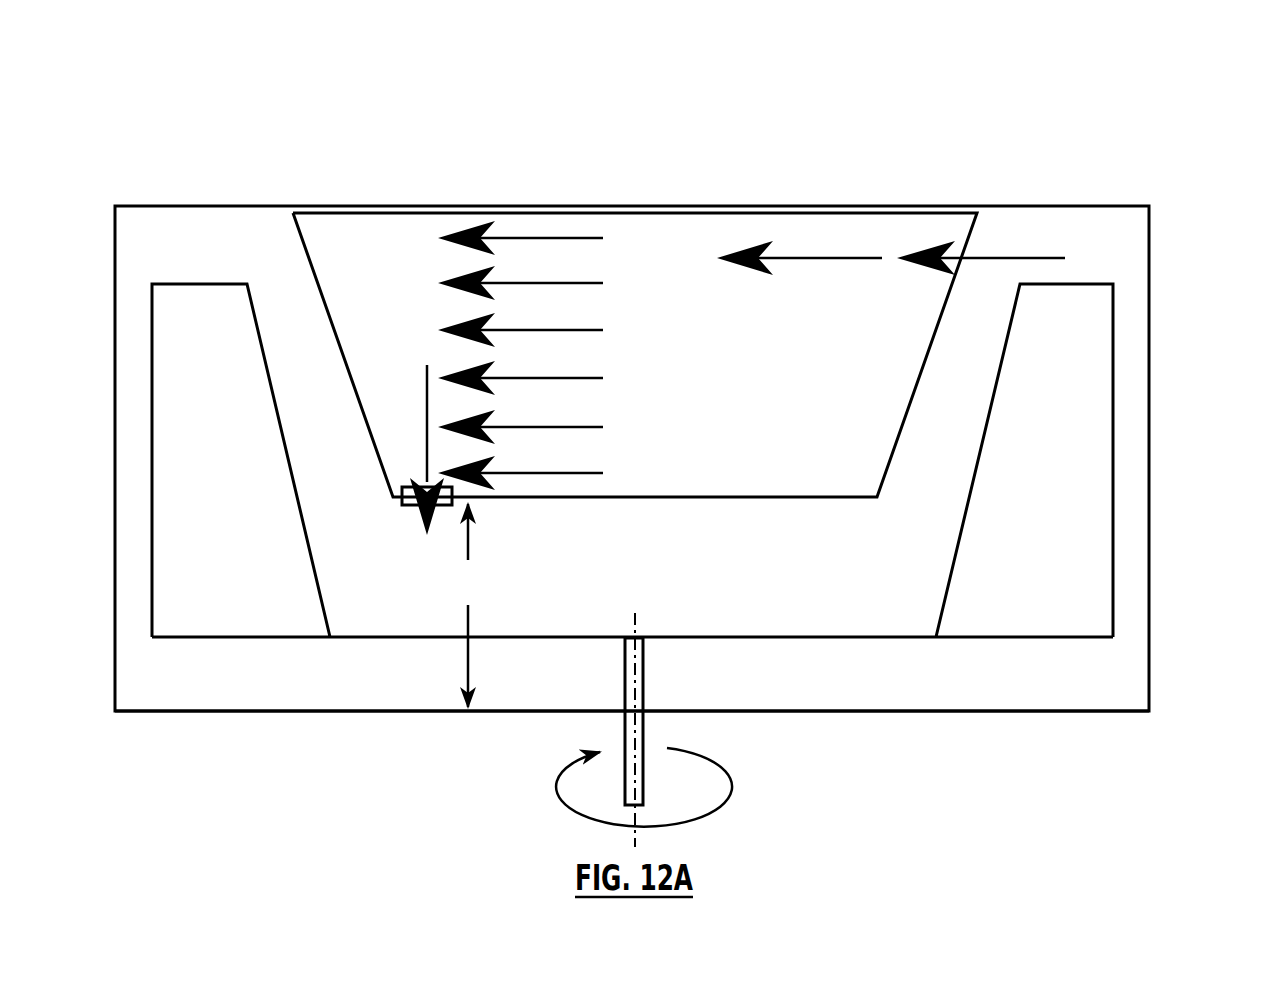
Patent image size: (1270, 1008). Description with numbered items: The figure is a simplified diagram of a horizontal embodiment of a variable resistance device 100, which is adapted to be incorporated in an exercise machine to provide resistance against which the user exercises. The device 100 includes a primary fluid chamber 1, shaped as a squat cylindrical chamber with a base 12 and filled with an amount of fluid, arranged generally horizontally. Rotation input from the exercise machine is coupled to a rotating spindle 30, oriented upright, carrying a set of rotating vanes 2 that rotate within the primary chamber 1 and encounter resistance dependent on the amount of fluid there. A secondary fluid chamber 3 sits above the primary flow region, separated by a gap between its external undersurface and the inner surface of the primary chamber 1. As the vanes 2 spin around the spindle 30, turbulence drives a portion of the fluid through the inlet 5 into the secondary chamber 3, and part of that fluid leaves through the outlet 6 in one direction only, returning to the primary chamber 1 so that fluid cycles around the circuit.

The variable resistance device 100 is at (332, 126).
The primary fluid chamber 1 is at (1157, 307).
The rotating vanes 2 is at (1085, 436).
The secondary fluid chamber 3 is at (772, 498).
The inlet 5 is at (966, 253).
The outlet 6 is at (400, 501).
The base 12 is at (278, 717).
The spindle 30 is at (643, 732).